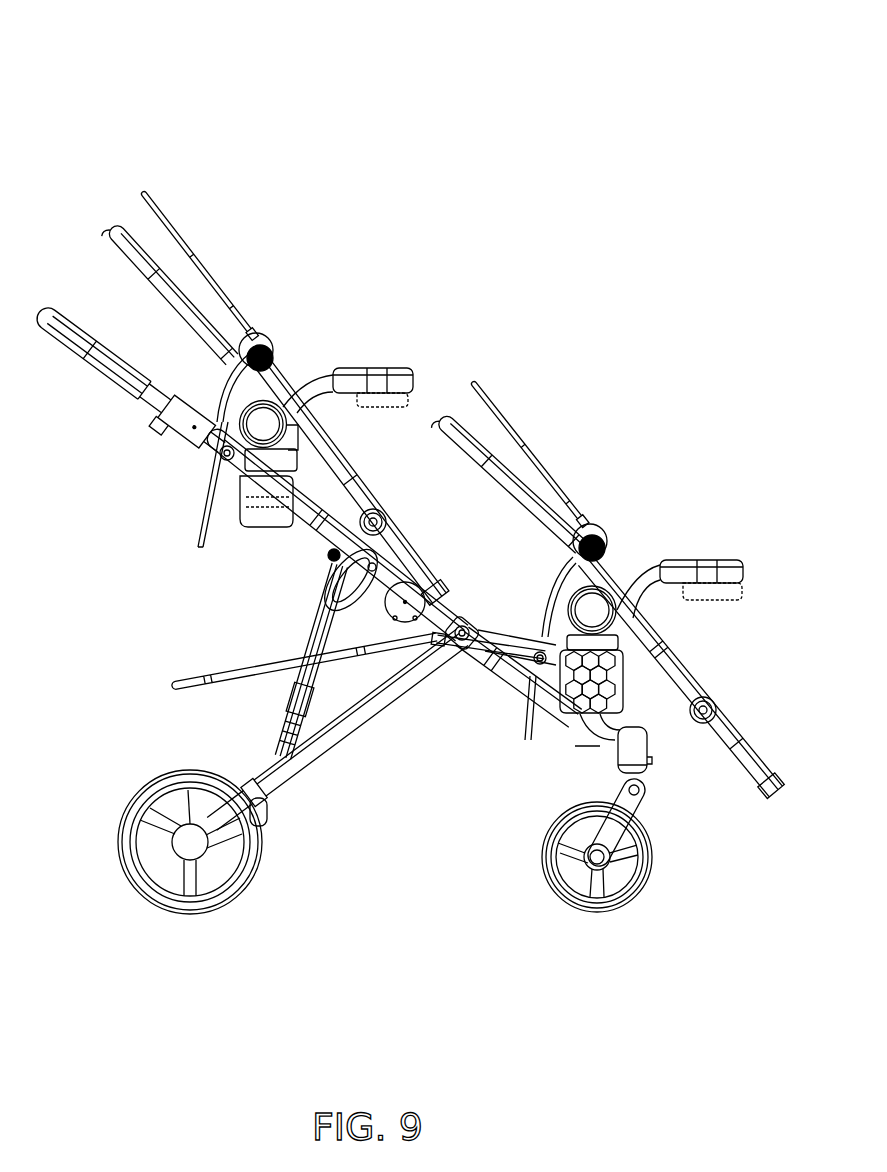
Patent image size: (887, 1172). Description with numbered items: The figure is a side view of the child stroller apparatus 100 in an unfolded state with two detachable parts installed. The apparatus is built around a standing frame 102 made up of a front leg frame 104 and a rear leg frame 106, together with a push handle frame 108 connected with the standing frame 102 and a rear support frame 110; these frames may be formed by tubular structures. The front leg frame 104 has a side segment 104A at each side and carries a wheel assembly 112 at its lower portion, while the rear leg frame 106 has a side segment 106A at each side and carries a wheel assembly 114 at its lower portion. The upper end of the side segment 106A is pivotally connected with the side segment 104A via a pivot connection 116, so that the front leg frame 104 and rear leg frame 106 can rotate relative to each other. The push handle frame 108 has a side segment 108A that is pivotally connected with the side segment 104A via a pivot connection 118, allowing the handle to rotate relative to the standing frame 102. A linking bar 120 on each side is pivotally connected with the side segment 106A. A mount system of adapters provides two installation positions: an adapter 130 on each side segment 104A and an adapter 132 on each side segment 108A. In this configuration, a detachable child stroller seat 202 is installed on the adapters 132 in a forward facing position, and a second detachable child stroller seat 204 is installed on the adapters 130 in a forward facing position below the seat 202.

The child stroller apparatus 100 is at (104, 37).
The standing frame 102 is at (427, 661).
The front leg frame 104 is at (554, 748).
The side segment of the front leg frame 104A is at (503, 680).
The rear leg frame 106 is at (337, 739).
The side segment of the rear leg frame 106A is at (383, 704).
The push handle frame 108 is at (72, 377).
The side segment of the push handle frame 108A is at (212, 456).
The rear support frame 110 is at (172, 686).
The wheel assembly 112 is at (620, 906).
The wheel assembly 114 is at (173, 912).
The pivot connection 116 is at (463, 630).
The pivot connection 118 is at (407, 598).
The linking bar 120 is at (287, 718).
The adapter 130 is at (620, 686).
The adapter 132 is at (247, 517).
The detachable child stroller seat 202 is at (315, 333).
The detachable child stroller seat 204 is at (693, 535).